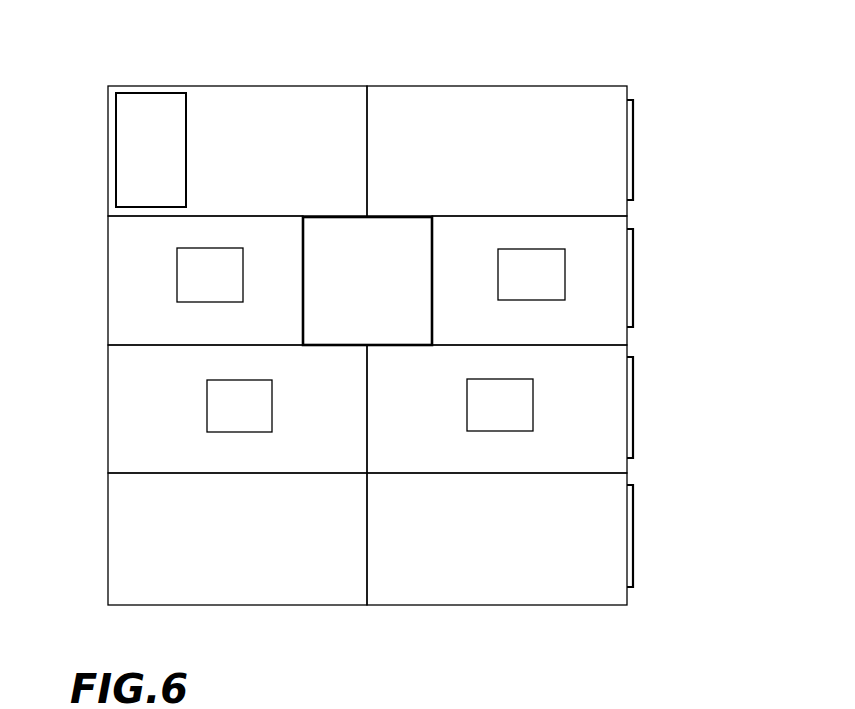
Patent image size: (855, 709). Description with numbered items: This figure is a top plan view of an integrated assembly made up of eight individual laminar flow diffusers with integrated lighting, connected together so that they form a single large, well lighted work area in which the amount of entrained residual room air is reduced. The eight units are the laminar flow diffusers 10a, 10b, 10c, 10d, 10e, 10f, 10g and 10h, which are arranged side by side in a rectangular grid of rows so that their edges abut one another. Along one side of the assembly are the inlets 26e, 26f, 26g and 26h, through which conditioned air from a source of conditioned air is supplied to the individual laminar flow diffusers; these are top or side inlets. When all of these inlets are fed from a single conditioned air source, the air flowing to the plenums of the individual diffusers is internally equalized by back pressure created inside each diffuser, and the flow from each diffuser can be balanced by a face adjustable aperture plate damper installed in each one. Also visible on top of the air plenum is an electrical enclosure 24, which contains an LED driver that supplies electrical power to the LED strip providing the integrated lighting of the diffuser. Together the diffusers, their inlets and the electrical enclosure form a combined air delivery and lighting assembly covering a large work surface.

The laminar flow diffuser 10a is at (255, 540).
The laminar flow diffuser 10b is at (178, 422).
The laminar flow diffuser 10c is at (233, 338).
The laminar flow diffuser 10d is at (285, 157).
The laminar flow diffuser 10e is at (527, 543).
The laminar flow diffuser 10f is at (597, 422).
The laminar flow diffuser 10g is at (553, 337).
The laminar flow diffuser 10h is at (527, 157).
The electrical enclosure 24 is at (132, 150).
The inlet 26e is at (633, 542).
The inlet 26f is at (633, 410).
The inlet 26g is at (633, 272).
The inlet 26h is at (633, 143).